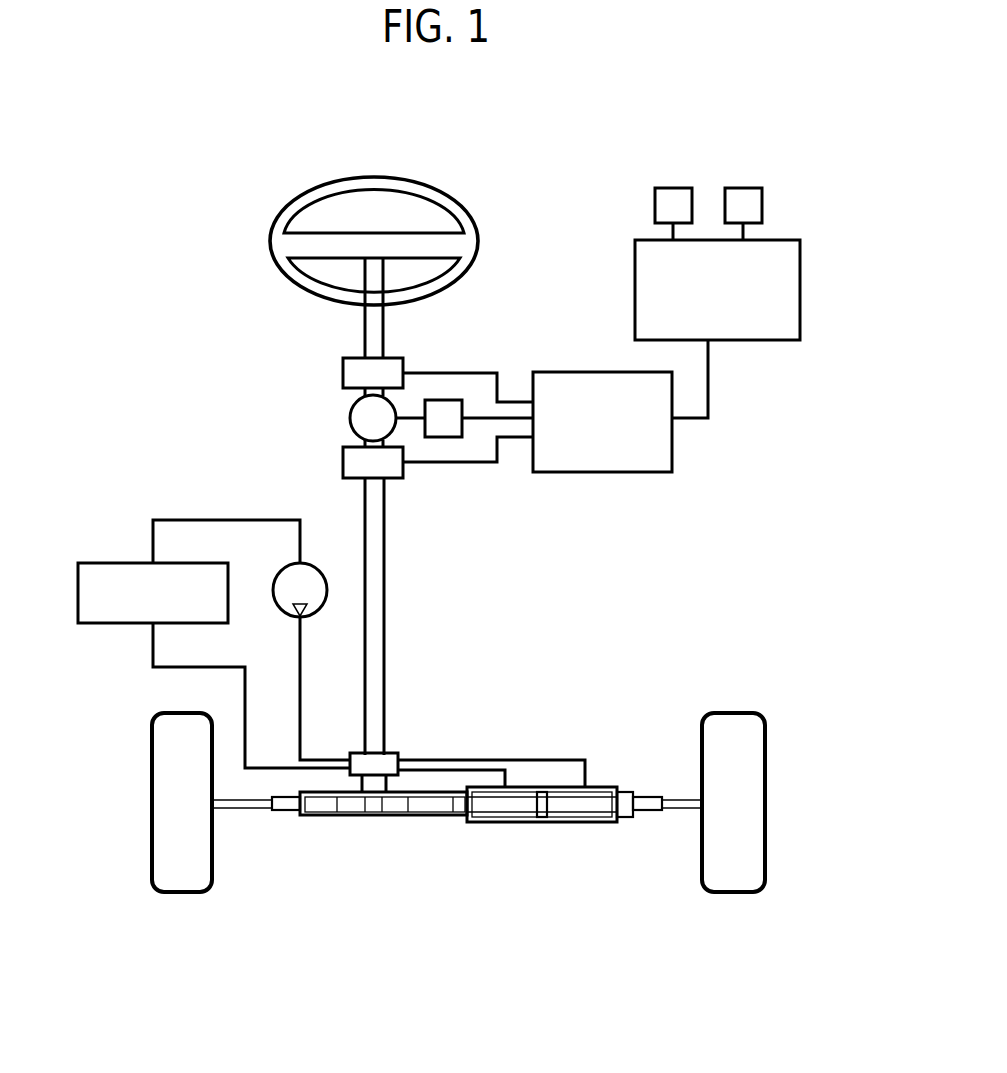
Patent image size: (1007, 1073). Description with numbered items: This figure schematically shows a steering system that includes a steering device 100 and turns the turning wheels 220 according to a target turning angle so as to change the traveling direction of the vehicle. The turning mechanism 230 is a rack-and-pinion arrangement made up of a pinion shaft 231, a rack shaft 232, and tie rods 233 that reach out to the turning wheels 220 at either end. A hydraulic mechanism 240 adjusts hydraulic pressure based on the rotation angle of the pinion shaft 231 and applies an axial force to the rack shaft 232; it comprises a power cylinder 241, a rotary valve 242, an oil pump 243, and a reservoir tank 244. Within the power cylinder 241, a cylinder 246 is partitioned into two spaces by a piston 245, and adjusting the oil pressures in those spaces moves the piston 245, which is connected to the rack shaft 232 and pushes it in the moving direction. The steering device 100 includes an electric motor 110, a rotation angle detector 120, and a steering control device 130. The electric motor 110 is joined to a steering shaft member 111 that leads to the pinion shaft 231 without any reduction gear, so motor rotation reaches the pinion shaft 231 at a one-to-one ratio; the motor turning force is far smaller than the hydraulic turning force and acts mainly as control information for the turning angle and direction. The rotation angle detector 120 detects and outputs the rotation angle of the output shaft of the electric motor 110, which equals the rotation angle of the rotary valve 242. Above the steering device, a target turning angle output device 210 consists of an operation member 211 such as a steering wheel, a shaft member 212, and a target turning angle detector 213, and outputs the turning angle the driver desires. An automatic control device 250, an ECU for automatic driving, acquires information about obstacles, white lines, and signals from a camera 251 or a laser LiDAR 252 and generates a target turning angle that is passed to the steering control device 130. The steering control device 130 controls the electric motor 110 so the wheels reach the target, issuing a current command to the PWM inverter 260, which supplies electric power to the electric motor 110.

The steering device 100 is at (602, 430).
The electric motor 110 is at (352, 413).
The steering shaft member 111 is at (385, 641).
The rotation angle detector 120 is at (343, 462).
The steering control device 130 is at (597, 372).
The target turning angle output device 210 is at (355, 274).
The operation member 211 is at (463, 203).
The shaft member 212 is at (363, 325).
The target turning angle detector 213 is at (397, 357).
The turning wheels 220 is at (182, 893).
The turning mechanism 230 is at (457, 844).
The pinion shaft 231 is at (383, 817).
The rack shaft 232 is at (452, 812).
The tie rods 233 is at (250, 810).
The hydraulic mechanism 240 is at (355, 684).
The power cylinder 241 is at (550, 796).
The rotary valve 242 is at (397, 753).
The oil pump 243 is at (328, 592).
The reservoir tank 244 is at (103, 562).
The piston 245 is at (545, 822).
The cylinder 246 is at (497, 822).
The automatic control device 250 is at (765, 240).
The camera 251 is at (671, 188).
The laser LiDAR 252 is at (744, 188).
The PWM inverter 260 is at (445, 437).